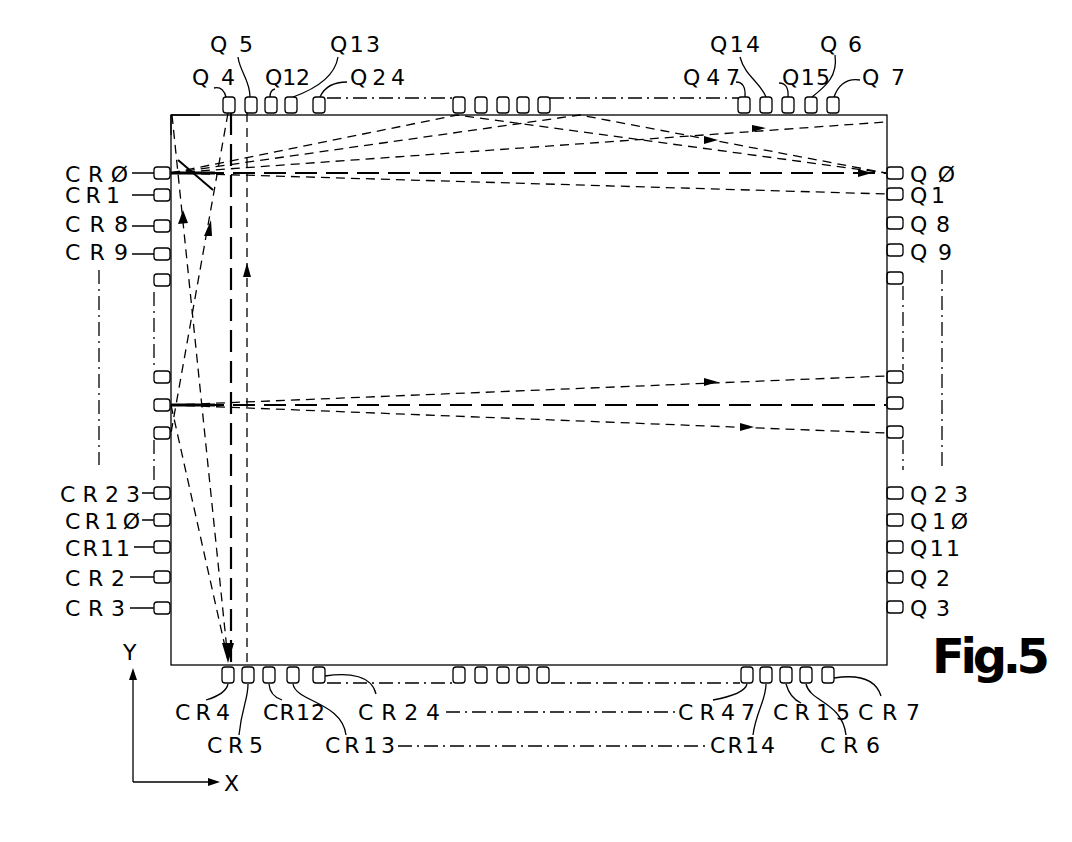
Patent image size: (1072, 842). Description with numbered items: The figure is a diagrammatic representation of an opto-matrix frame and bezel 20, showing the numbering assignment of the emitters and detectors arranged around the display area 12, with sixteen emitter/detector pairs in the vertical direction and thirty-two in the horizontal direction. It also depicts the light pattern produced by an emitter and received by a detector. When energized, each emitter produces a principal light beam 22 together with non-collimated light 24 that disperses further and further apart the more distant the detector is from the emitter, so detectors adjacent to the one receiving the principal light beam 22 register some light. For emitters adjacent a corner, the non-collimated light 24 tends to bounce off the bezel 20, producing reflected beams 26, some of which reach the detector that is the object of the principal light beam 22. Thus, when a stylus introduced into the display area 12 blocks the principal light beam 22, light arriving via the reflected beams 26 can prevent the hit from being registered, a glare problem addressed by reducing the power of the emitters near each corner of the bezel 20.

The display area 12 is at (878, 140).
The bezel 20 is at (171, 116).
The principal light beam pattern 22 is at (506, 176).
The non-collimated light 24 is at (437, 128).
The reflected beam 26 is at (210, 204).